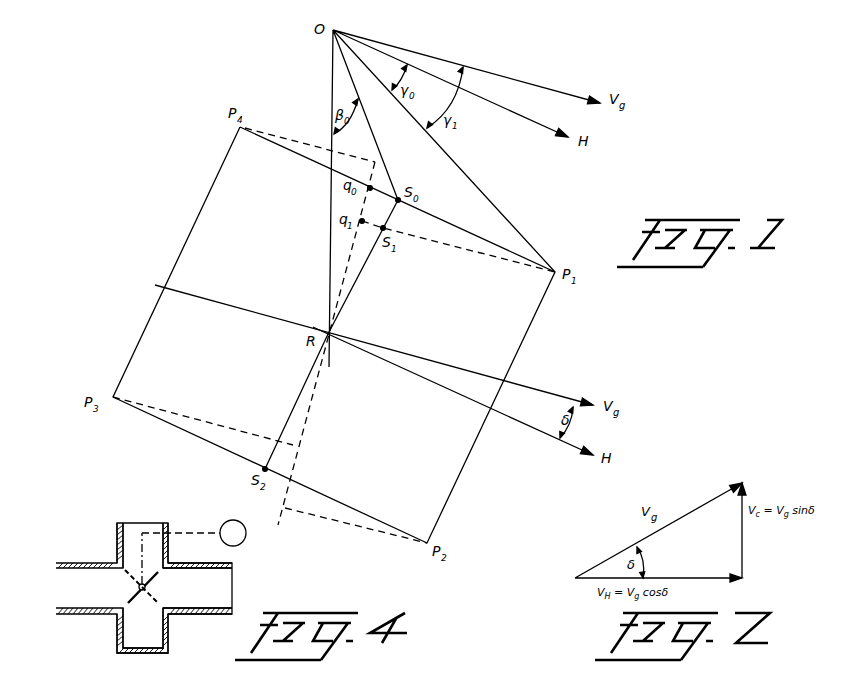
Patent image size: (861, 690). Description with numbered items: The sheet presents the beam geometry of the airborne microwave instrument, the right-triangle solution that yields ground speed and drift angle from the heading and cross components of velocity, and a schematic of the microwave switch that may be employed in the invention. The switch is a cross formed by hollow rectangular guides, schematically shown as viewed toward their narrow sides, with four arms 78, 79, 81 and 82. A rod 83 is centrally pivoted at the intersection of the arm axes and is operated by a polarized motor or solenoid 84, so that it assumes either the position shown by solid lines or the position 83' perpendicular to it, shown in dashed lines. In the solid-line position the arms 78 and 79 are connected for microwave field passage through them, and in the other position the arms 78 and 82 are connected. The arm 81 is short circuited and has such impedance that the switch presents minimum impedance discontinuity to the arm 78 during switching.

The arm 78 is at (128, 534).
The arm 79 is at (83, 563).
The arm 81 is at (117, 630).
The arm 82 is at (195, 615).
The rod 83 is at (163, 587).
The rod position 83' is at (122, 586).
The polarized motor or solenoid 84 is at (228, 521).